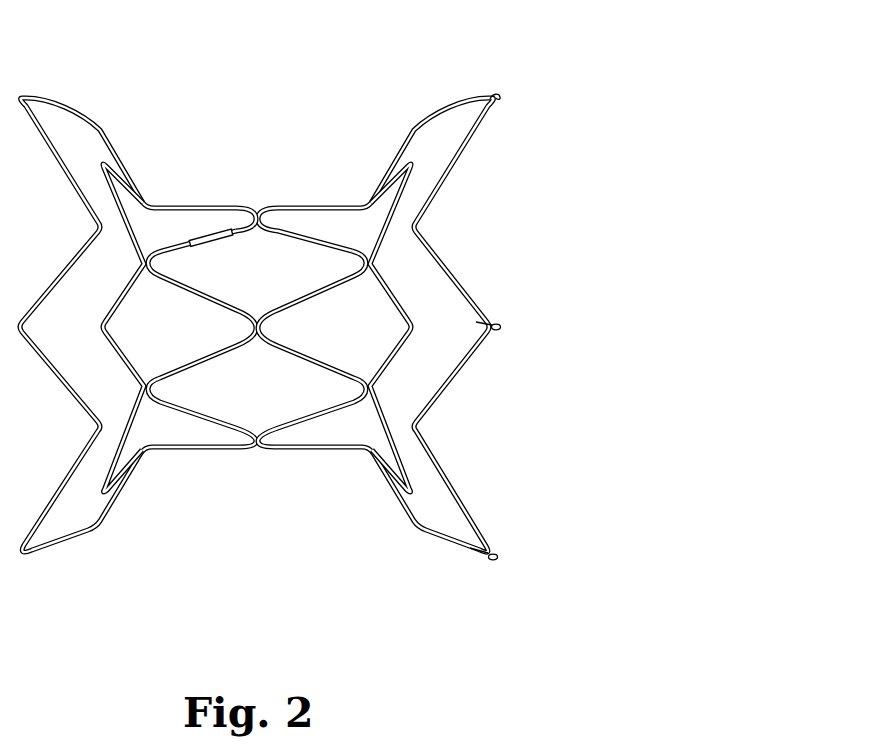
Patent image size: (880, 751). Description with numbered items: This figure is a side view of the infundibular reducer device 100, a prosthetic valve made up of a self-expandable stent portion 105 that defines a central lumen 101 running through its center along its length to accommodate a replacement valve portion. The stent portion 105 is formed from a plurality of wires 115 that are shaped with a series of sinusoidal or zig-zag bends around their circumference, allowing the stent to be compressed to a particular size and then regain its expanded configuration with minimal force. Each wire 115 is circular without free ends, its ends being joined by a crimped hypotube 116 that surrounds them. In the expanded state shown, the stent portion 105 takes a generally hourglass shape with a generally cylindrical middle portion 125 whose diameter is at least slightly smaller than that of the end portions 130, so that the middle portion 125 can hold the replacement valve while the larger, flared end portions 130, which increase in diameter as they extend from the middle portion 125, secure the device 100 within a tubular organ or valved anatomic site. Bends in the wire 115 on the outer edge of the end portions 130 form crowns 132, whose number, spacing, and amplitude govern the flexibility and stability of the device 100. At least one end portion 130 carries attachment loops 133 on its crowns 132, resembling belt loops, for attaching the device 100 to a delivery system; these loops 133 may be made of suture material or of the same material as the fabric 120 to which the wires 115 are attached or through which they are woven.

The infundibular reducer device 100 is at (310, 331).
The central lumen 101 is at (478, 277).
The self-expandable stent portion 105 is at (268, 166).
The wires 115 is at (393, 372).
The crimped hypotube 116 is at (213, 240).
The fabric 120 is at (217, 255).
The middle portion 125 is at (257, 369).
The end portions 130 is at (310, 366).
The crowns 132 is at (488, 324).
The attachment loops 133 is at (497, 98).